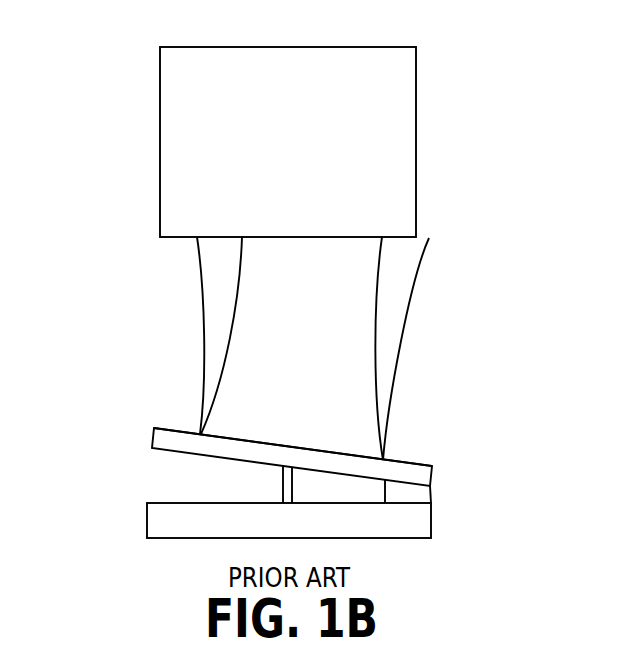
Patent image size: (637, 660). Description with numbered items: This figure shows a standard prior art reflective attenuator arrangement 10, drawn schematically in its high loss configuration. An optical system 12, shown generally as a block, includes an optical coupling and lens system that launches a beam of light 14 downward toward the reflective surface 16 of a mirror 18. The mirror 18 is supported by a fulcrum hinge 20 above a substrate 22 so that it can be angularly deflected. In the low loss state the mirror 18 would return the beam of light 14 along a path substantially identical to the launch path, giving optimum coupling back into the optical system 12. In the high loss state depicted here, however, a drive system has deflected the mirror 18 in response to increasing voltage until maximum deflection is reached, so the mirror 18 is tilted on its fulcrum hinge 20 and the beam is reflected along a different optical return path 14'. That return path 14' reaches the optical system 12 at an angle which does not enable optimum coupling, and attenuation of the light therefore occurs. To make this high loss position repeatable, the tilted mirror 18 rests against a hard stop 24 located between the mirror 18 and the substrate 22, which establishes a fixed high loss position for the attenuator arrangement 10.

The attenuator arrangement 10 is at (100, 108).
The optical system 12 is at (397, 82).
The beam of light 14 is at (177, 335).
The optical return path 14' is at (442, 348).
The reflective surface 16 is at (413, 463).
The mirror 18 is at (153, 434).
The fulcrum hinge 20 is at (282, 481).
The substrate 22 is at (167, 502).
The hard stop 24 is at (415, 495).